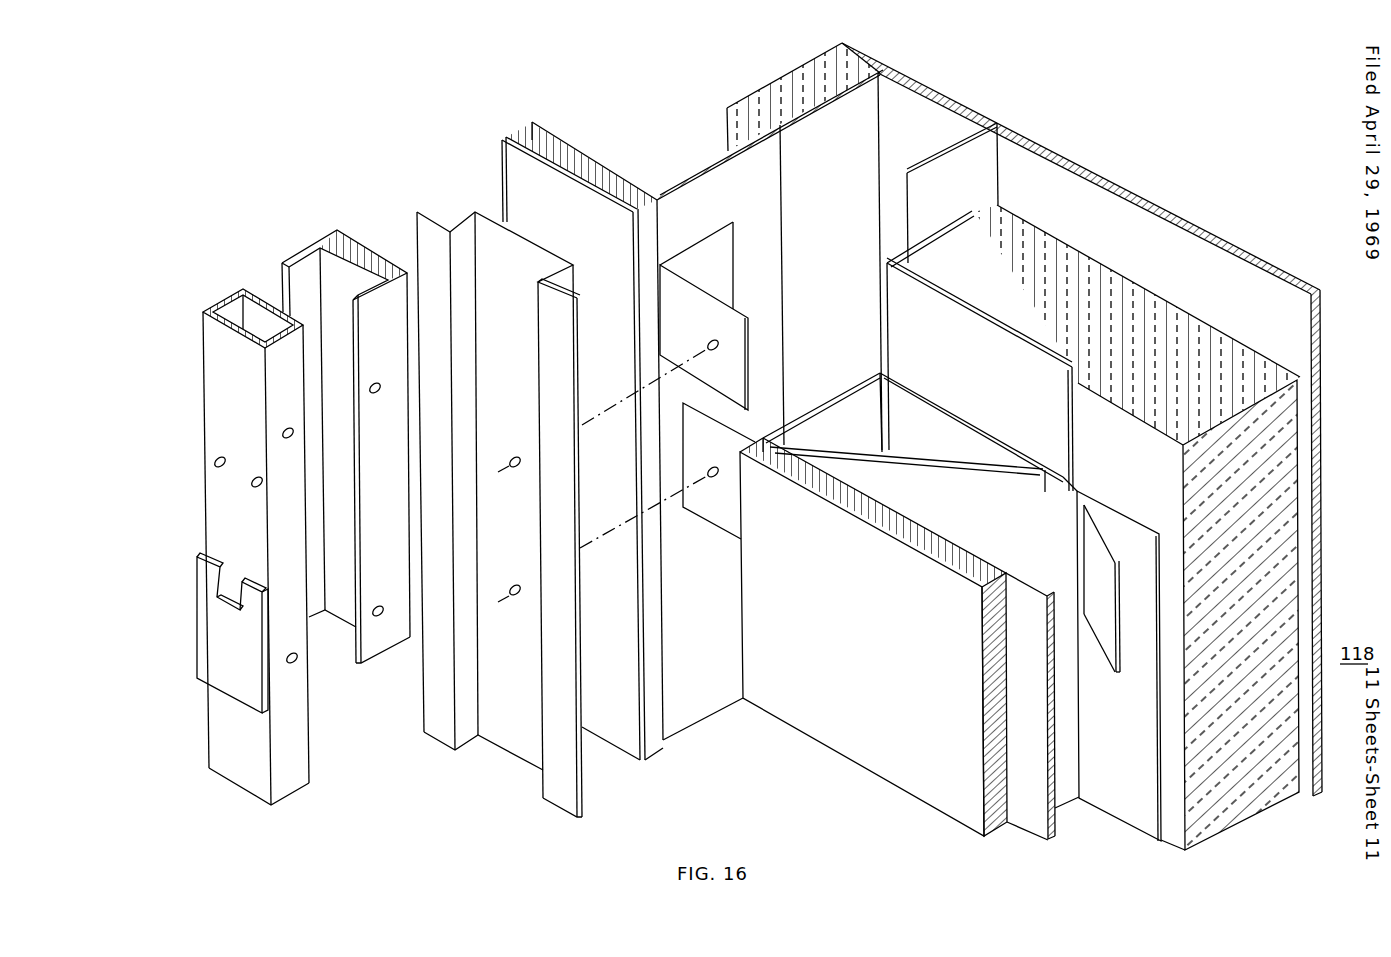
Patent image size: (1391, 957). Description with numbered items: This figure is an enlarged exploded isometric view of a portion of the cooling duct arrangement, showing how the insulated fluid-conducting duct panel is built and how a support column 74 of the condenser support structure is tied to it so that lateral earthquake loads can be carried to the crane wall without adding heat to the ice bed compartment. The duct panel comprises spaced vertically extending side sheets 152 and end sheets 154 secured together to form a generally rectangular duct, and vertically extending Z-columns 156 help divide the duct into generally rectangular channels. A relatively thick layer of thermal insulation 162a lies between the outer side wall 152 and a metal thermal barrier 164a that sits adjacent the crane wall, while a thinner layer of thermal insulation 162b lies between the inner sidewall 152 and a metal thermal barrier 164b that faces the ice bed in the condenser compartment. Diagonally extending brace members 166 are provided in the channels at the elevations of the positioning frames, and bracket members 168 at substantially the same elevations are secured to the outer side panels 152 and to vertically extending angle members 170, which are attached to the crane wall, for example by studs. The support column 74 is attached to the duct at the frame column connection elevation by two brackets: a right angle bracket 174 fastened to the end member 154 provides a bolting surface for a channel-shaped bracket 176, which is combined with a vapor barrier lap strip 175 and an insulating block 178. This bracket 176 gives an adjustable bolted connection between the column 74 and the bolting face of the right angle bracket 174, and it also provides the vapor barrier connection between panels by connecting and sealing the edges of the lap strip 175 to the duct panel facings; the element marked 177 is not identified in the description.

The support column 74 is at (238, 547).
The side sheet 152 is at (1118, 825).
The end sheet 154 is at (841, 417).
The Z-column 156 is at (1060, 522).
The thermal insulation layer 162a is at (1299, 592).
The thermal insulation layer 162b is at (997, 828).
The metal thermal barrier 164a is at (1231, 263).
The metal thermal barrier 164b is at (882, 778).
The brace member 166 is at (1137, 682).
The bracket member 168 is at (1003, 329).
The angle member 170 is at (973, 158).
The right angle bracket 174 is at (738, 304).
The vapor barrier lap strip 175 is at (581, 797).
The channel-shaped bracket 176 is at (395, 642).
The clip plate 177 is at (205, 656).
The insulating block 178 is at (344, 607).